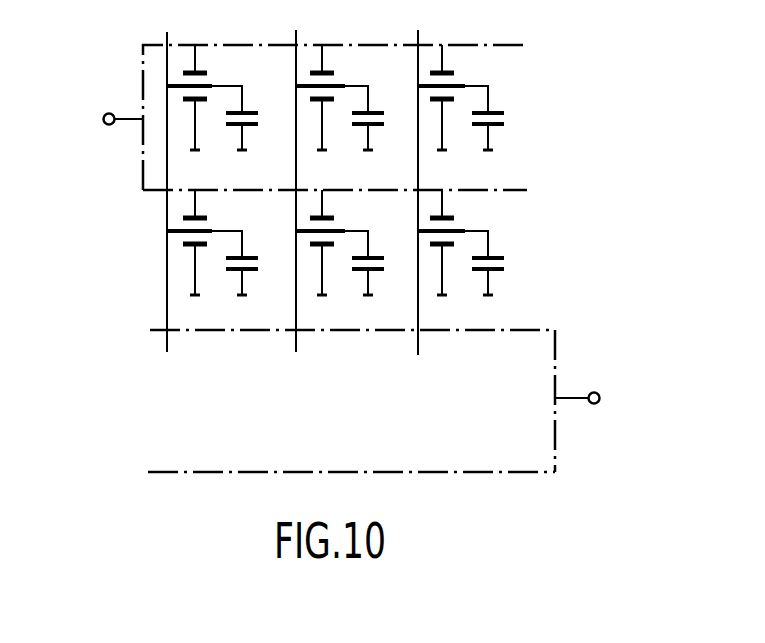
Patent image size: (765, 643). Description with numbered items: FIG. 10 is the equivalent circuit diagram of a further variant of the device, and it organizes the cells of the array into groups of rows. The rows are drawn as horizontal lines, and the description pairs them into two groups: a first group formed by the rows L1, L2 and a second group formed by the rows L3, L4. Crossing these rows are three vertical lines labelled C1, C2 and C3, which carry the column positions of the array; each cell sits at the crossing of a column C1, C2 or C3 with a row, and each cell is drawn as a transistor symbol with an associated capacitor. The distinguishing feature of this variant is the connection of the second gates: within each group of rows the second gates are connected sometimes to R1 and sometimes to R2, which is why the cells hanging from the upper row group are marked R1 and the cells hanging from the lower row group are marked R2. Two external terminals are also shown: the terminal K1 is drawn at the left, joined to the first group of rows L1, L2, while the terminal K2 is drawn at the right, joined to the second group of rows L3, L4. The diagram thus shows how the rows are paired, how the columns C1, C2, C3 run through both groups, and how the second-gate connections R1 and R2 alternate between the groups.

The first column line C1 is at (168, 178).
The second column line C2 is at (297, 179).
The third column line C3 is at (416, 180).
The row L1 is at (350, 110).
The row L2 is at (350, 190).
The row L3 is at (331, 396).
The row L4 is at (329, 471).
The first terminal K1 is at (118, 109).
The second terminal K2 is at (581, 388).
The second-gate connection R1 is at (335, 116).
The second-gate connection R2 is at (335, 260).